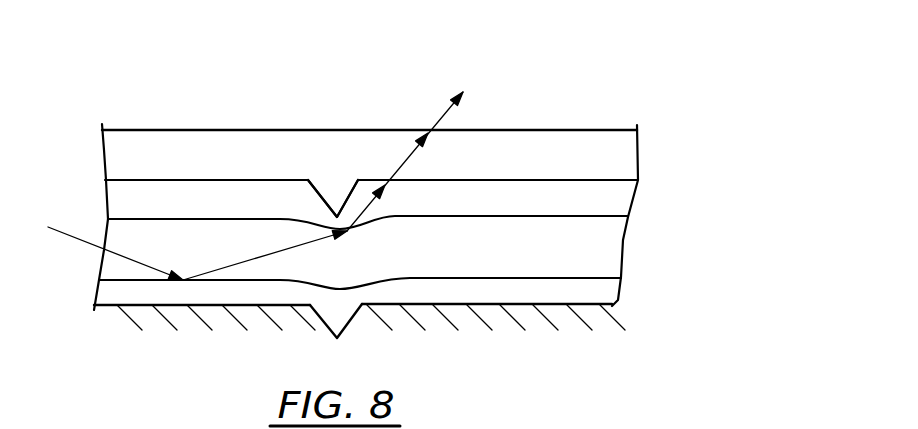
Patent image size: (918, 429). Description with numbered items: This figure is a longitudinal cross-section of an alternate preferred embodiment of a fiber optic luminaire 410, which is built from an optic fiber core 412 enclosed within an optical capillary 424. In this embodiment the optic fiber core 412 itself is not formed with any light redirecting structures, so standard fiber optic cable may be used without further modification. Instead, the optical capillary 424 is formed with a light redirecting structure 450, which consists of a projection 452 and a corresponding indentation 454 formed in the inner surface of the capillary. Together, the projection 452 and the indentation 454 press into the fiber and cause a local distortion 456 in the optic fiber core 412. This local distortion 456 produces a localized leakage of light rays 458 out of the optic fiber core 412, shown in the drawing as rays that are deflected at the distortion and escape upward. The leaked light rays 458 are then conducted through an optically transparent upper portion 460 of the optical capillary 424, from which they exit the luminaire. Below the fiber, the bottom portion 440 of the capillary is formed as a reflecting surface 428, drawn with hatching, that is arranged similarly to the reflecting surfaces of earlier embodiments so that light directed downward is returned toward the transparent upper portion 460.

The fiber optic luminaire 410 is at (664, 277).
The optic fiber core 412 is at (618, 240).
The optical capillary 424 is at (627, 135).
The reflecting surface 428 is at (225, 330).
The bottom portion 440 is at (150, 299).
The light redirecting structure 450 is at (303, 160).
The projection 452 is at (331, 190).
The indentation 454 is at (350, 316).
The local distortion 456 is at (390, 253).
The light rays 458 is at (368, 203).
The upper portion 460 is at (186, 147).